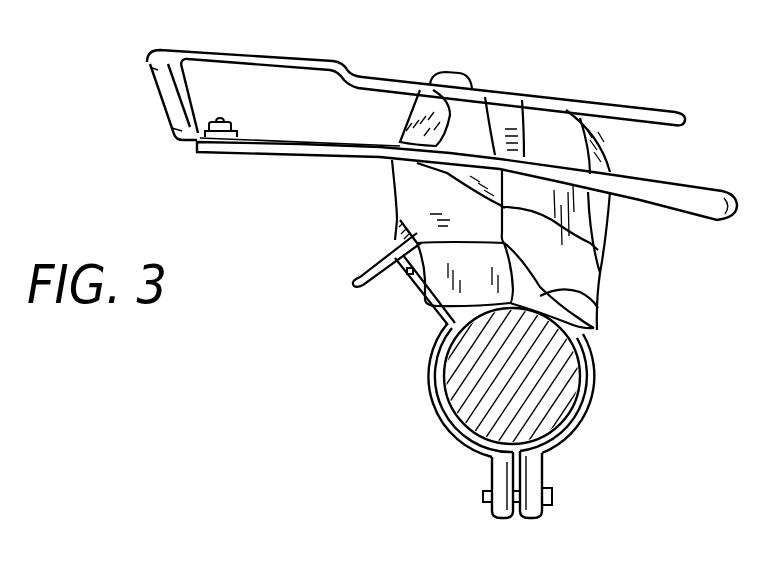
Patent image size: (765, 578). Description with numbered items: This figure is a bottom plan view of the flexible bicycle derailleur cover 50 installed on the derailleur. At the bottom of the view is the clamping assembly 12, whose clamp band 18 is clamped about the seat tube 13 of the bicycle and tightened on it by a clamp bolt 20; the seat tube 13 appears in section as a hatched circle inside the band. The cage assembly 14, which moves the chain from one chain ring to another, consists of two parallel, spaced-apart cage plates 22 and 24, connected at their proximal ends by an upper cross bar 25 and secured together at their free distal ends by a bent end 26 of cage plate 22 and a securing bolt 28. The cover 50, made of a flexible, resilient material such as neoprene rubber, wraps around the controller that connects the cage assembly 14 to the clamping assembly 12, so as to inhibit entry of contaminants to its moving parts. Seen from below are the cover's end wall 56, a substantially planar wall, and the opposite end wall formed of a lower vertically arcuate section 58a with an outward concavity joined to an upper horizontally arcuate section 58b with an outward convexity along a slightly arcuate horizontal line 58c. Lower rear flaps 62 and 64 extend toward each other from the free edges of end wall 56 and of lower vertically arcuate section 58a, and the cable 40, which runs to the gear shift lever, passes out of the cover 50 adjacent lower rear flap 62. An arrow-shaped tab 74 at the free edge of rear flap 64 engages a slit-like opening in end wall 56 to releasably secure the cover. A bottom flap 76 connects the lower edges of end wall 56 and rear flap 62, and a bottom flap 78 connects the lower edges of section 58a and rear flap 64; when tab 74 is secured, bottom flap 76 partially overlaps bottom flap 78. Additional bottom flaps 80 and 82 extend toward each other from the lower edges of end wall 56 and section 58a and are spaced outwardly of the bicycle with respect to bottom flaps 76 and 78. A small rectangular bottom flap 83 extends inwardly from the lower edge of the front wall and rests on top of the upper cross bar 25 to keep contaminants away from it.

The clamping assembly 12 is at (575, 474).
The seat tube 13 is at (455, 388).
The cage assembly 14 is at (168, 137).
The clamp band 18 is at (488, 472).
The clamp bolt 20 is at (555, 496).
The cage plate 22 is at (240, 152).
The cage plate 24 is at (276, 52).
The upper cross bar 25 is at (465, 118).
The bent end 26 is at (165, 102).
The securing bolt 28 is at (212, 122).
The cable 40 is at (440, 287).
The cover 50 is at (674, 280).
The end wall 56 is at (395, 231).
The lower vertically arcuate section 58a is at (543, 118).
The upper horizontally arcuate section 58b is at (607, 155).
The horizontal line 58c is at (590, 112).
The lower rear flap 62 is at (440, 322).
The lower rear flap 64 is at (578, 291).
The tab 74 is at (356, 282).
The bottom flap 76 is at (410, 193).
The bottom flap 78 is at (600, 246).
The bottom flap 80 is at (410, 110).
The bottom flap 82 is at (505, 113).
The rectangular bottom flap 83 is at (442, 72).